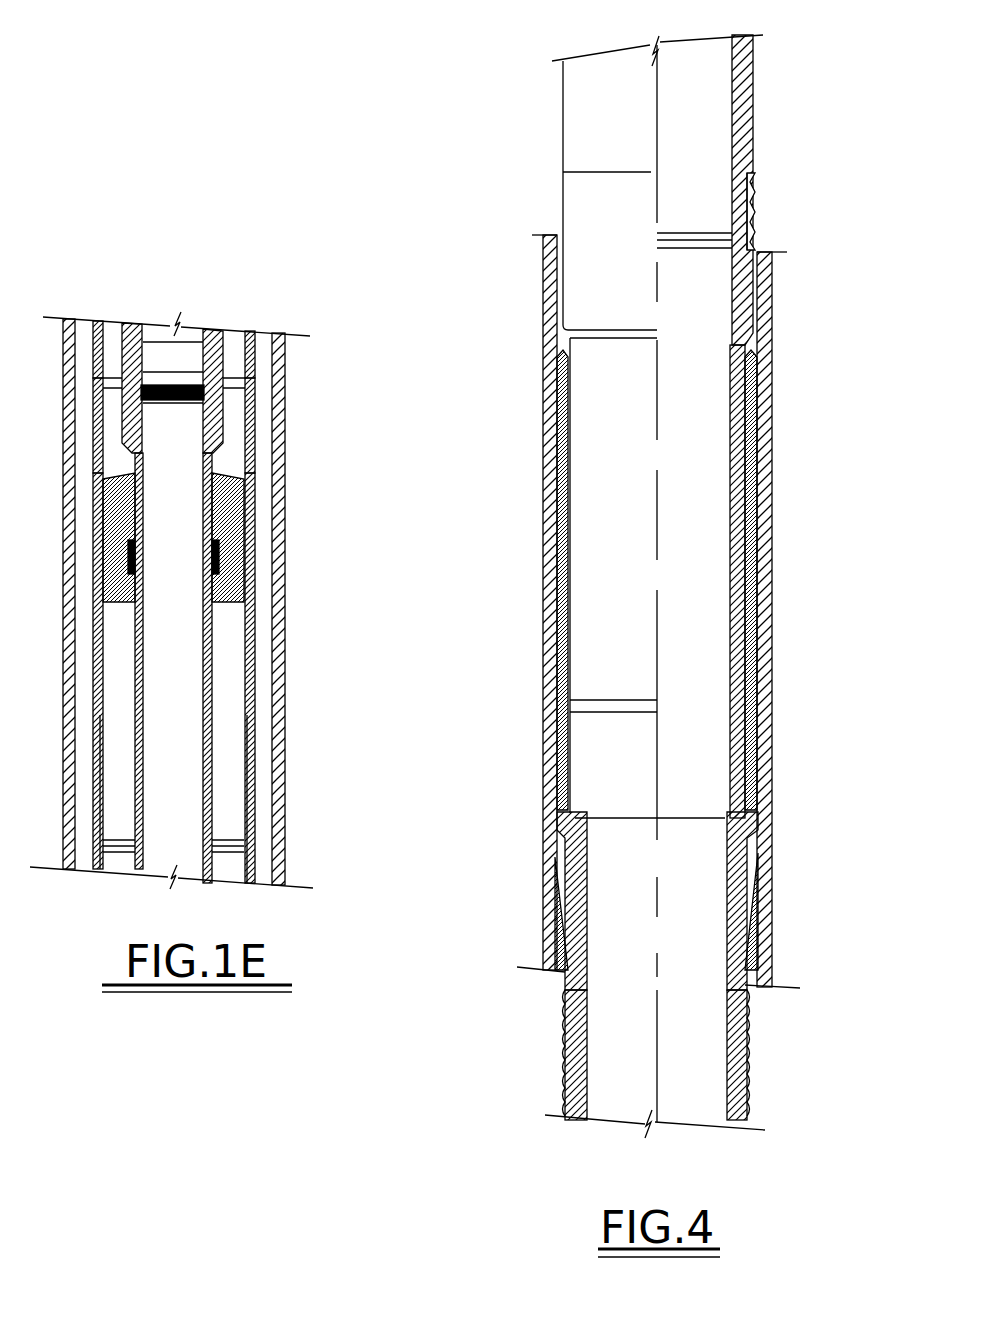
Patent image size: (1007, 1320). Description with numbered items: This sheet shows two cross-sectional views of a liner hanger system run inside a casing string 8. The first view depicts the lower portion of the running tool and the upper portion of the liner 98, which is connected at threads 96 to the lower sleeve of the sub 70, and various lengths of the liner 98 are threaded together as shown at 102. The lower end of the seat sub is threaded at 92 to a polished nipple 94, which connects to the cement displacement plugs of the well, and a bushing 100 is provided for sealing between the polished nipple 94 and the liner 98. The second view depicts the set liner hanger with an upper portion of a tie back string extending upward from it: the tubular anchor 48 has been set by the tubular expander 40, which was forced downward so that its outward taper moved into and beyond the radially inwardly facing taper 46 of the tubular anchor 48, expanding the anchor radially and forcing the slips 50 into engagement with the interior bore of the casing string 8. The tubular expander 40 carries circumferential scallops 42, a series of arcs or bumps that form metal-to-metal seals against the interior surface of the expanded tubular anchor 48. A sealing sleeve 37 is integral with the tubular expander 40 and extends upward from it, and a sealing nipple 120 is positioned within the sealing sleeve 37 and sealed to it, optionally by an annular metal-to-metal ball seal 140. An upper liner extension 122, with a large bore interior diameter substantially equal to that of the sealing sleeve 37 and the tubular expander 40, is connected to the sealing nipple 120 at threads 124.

In FIG. 1E, the casing string 8 is at (285, 562).
In FIG. 4, the casing string 8 is at (772, 657).
In FIG. 1E, the sub 70 is at (255, 363).
In FIG. 1E, the threads 92 is at (210, 418).
In FIG. 1E, the polished nipple 94 is at (212, 672).
In FIG. 1E, the threads 96 is at (255, 447).
In FIG. 1E, the liner 98 is at (255, 618).
In FIG. 1E, the bushing 100 is at (238, 500).
In FIG. 1E, the threaded connection 102 is at (253, 775).
In FIG. 4, the upper liner extension 122 is at (752, 157).
In FIG. 4, the threads 124 is at (753, 212).
In FIG. 4, the sealing nipple 120 is at (745, 570).
In FIG. 4, the annular metal-to-metal ball seal 140 is at (748, 707).
In FIG. 4, the sealing sleeve 37 is at (772, 724).
In FIG. 4, the radially inwardly facing taper 46 is at (772, 853).
In FIG. 4, the slips 50 is at (770, 945).
In FIG. 4, the tubular anchor 48 is at (748, 980).
In FIG. 4, the tubular expander 40 is at (748, 1030).
In FIG. 4, the circumferential scallops 42 is at (748, 1072).